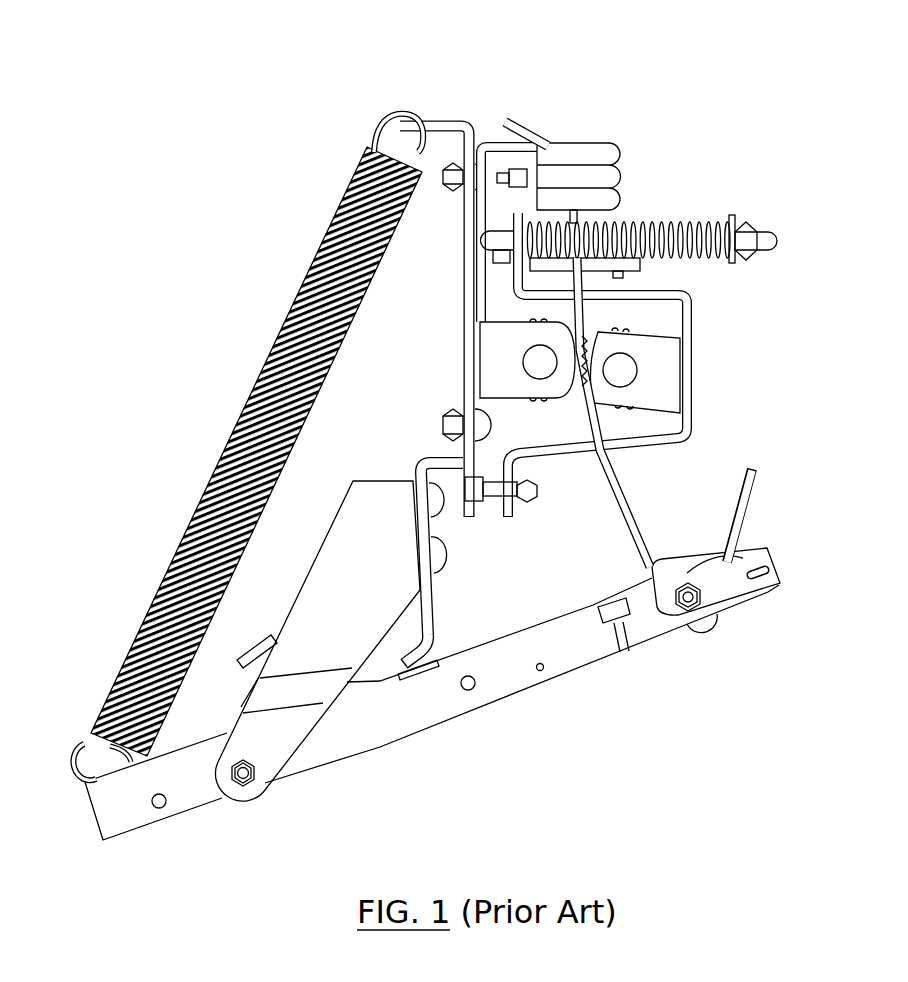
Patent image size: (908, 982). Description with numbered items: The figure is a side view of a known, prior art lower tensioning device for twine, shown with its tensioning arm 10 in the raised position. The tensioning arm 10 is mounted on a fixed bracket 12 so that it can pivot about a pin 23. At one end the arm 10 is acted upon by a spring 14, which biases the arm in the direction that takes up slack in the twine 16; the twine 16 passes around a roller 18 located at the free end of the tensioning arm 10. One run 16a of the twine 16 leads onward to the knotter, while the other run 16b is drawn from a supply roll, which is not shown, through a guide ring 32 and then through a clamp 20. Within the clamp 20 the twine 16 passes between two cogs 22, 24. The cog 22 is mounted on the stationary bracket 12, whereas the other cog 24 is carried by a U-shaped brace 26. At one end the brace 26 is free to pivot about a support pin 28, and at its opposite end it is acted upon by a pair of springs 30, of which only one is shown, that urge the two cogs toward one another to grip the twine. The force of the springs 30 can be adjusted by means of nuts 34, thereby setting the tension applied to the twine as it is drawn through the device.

The tensioning arm 10 is at (530, 677).
The fixed bracket 12 is at (463, 377).
The spring 14 is at (287, 317).
The twine 16 is at (608, 554).
The run of the twine 16a is at (757, 480).
The run of the twine 16b is at (637, 510).
The roller 18 is at (707, 627).
The clamp 20 is at (737, 329).
The cog 22 is at (545, 323).
The pin 23 is at (257, 780).
The cog 24 is at (630, 330).
The U-shaped brace 26 is at (682, 403).
The support pin 28 is at (530, 501).
The springs 30 is at (700, 223).
The guide ring 32 is at (602, 147).
The nuts 34 is at (757, 222).